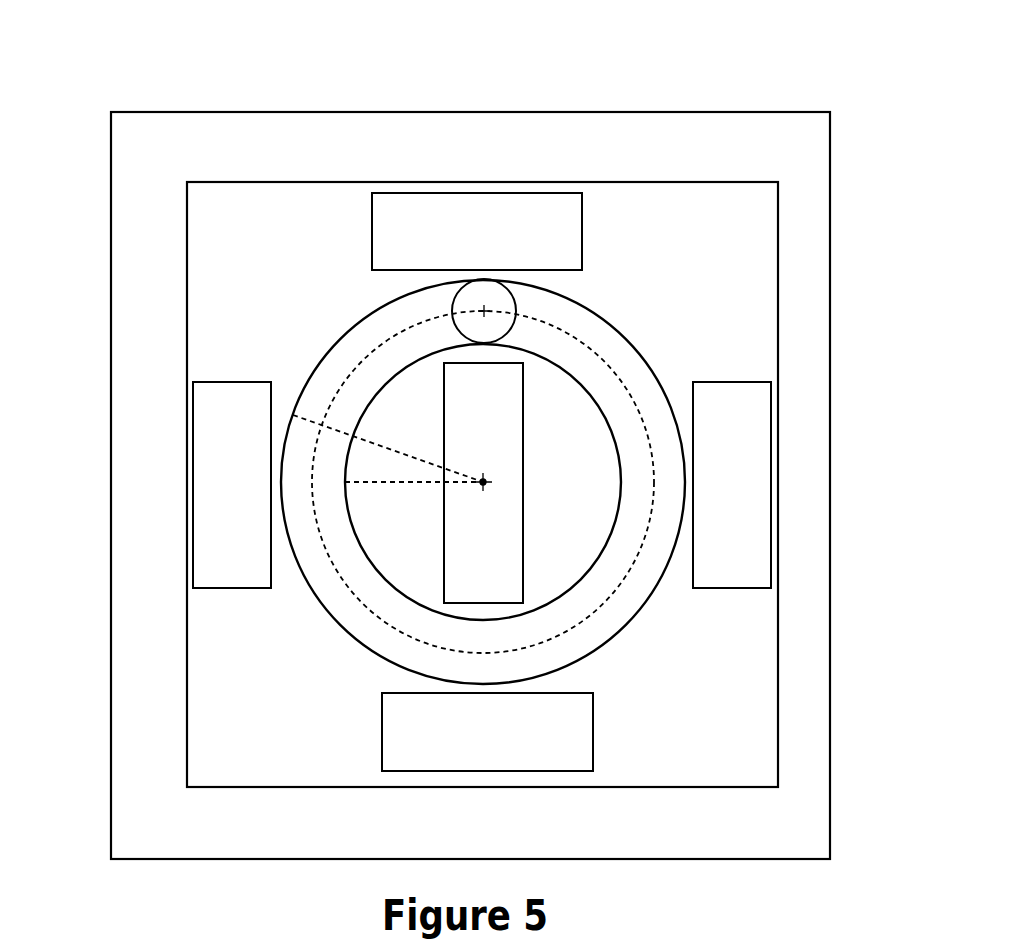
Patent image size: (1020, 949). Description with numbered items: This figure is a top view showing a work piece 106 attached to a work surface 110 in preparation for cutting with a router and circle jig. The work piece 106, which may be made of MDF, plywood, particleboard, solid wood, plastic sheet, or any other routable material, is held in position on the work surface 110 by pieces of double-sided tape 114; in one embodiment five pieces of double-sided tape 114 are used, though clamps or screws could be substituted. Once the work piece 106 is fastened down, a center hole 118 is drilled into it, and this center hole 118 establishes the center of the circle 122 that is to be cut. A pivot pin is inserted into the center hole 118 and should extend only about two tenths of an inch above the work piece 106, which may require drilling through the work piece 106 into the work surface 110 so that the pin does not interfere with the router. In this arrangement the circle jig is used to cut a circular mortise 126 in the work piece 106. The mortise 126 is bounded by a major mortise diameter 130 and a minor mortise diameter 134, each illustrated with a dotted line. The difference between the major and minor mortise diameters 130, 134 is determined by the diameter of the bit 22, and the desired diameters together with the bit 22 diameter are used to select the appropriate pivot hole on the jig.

The bit 22 is at (460, 285).
The work piece 106 is at (632, 182).
The work surface 110 is at (805, 113).
The double-sided tape 114 is at (737, 380).
The center hole 118 is at (483, 482).
The circle 122 is at (575, 378).
The circular mortise 126 is at (382, 638).
The major mortise diameter 130 is at (375, 443).
The minor mortise diameter 134 is at (375, 482).